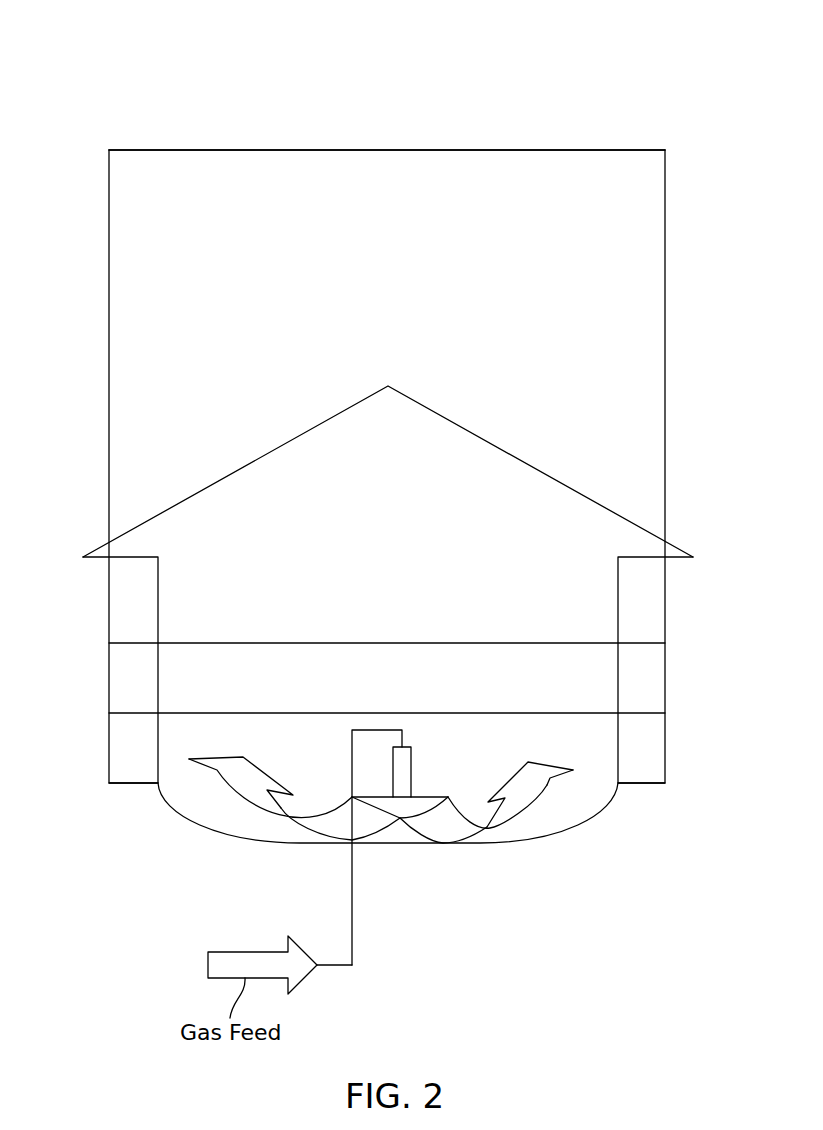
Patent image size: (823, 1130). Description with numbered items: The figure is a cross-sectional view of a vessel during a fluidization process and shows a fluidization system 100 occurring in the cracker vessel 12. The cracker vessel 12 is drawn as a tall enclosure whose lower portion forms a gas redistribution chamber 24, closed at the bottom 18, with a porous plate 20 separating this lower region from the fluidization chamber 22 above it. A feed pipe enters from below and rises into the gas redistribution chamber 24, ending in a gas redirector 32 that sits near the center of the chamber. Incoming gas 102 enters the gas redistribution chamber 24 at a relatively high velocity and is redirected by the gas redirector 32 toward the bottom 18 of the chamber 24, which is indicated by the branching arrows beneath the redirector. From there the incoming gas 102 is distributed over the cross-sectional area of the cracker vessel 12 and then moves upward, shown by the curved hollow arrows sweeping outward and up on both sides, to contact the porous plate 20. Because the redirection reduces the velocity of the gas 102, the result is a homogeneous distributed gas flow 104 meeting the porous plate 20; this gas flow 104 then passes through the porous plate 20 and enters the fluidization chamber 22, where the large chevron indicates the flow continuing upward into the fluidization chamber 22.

The fluidization system 100 is at (116, 60).
The cracker vessel 12 is at (109, 315).
The fluidization chamber 22 is at (618, 292).
The porous plate 20 is at (178, 686).
The gas redistribution chamber 24 is at (185, 730).
The bottom 18 is at (212, 827).
The gas redirector 32 is at (405, 747).
The incoming gas 102 is at (400, 818).
The distributed gas flow 104 is at (572, 490).